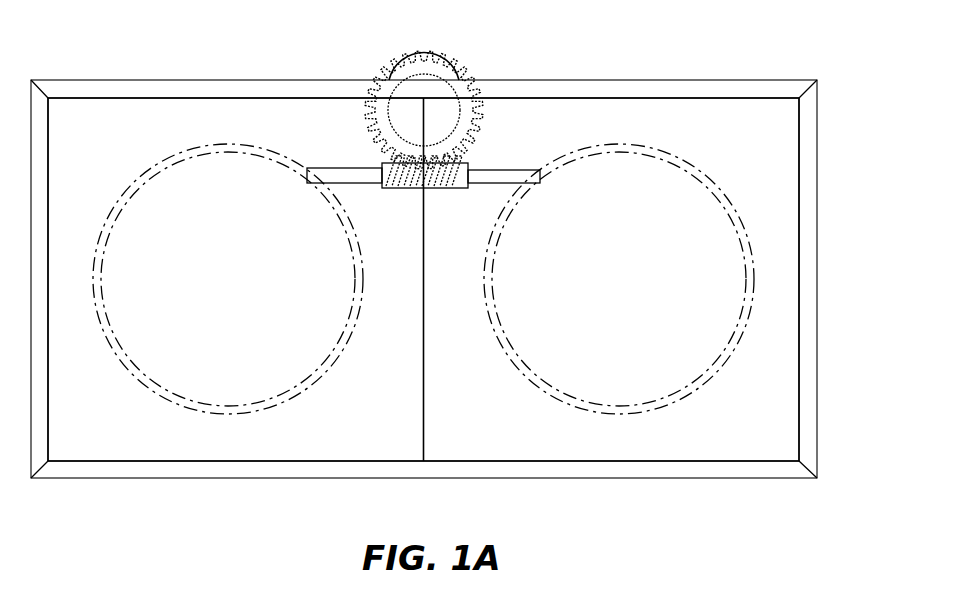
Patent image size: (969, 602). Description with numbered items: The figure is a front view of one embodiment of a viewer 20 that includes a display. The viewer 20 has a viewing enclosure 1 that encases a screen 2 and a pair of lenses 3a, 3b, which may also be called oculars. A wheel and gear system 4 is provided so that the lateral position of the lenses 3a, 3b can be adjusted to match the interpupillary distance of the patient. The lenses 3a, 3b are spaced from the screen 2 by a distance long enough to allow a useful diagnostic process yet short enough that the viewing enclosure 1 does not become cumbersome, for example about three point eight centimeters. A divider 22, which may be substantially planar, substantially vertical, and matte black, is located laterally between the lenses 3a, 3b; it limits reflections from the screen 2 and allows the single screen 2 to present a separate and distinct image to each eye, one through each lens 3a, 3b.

The viewing enclosure 1 is at (148, 79).
The screen 2 is at (87, 142).
The lens 3a is at (242, 293).
The lens 3b is at (634, 293).
The wheel and gear system 4 is at (378, 66).
The viewer 20 is at (765, 46).
The divider 22 is at (421, 404).